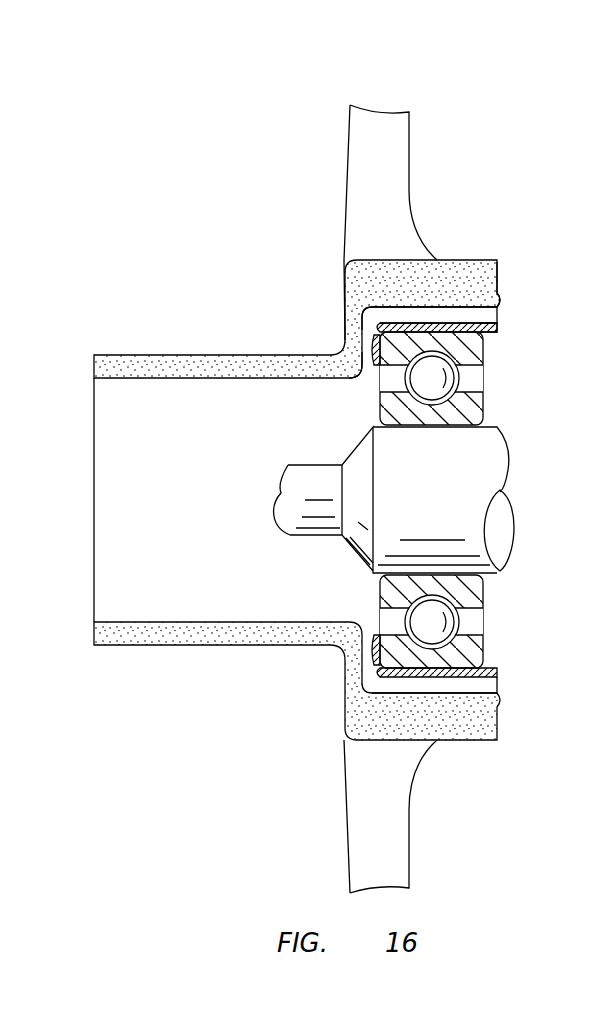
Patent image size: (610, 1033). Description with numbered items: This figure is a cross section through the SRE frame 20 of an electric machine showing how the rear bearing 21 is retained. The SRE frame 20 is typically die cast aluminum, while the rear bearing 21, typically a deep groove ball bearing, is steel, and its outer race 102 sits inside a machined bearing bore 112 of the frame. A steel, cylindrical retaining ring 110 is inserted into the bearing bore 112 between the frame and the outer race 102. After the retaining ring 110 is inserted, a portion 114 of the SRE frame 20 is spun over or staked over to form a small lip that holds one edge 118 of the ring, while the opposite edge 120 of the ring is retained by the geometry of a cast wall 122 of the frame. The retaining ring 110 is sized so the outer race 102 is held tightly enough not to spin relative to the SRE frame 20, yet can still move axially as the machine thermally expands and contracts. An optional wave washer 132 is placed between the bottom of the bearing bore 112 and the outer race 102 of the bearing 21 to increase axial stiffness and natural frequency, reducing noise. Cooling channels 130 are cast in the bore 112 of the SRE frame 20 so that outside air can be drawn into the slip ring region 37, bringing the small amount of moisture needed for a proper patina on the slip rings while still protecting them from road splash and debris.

The SRE frame 20 is at (340, 683).
The rear bearing 21 is at (483, 633).
The slip ring region 37 is at (214, 502).
The outer race 102 is at (485, 350).
The retaining ring 110 is at (443, 309).
The bearing bore 112 is at (403, 322).
The portion of the SRE frame 114 is at (500, 303).
The edge of the steel ring 118 is at (500, 328).
The opposite edge of the ring 120 is at (368, 320).
The cast wall 122 is at (377, 366).
The cooling channels 130 is at (415, 693).
The wave washer 132 is at (373, 347).